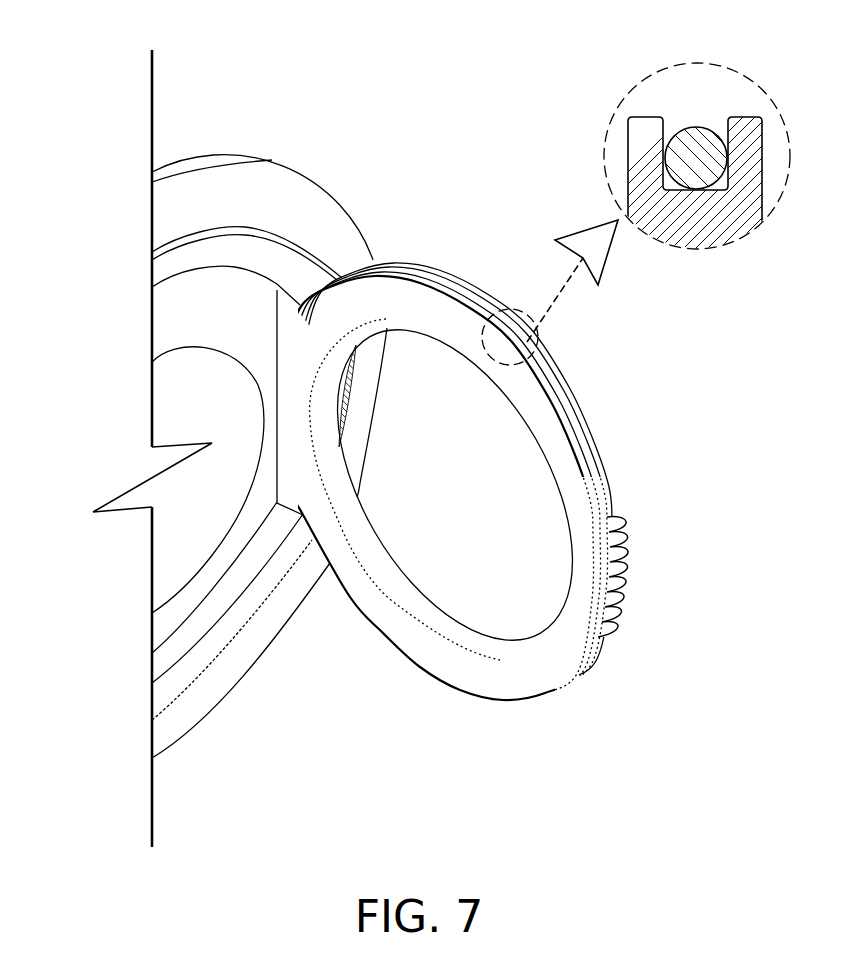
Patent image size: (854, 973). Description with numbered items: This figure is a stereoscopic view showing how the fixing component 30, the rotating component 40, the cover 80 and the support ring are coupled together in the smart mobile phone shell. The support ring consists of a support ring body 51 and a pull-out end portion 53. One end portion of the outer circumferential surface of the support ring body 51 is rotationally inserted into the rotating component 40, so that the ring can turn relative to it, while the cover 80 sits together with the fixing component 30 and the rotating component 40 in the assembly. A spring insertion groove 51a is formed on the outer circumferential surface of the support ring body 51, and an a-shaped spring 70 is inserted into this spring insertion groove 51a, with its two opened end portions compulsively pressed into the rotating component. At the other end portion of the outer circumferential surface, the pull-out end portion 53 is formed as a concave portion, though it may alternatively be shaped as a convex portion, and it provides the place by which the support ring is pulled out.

The fixing component 30 is at (187, 723).
The rotating component 40 is at (160, 276).
The support ring body 51 is at (443, 663).
The spring insertion groove 51a is at (667, 120).
The pull-out end portion 53 is at (627, 552).
The spring 70 is at (695, 132).
The cover 80 is at (218, 412).